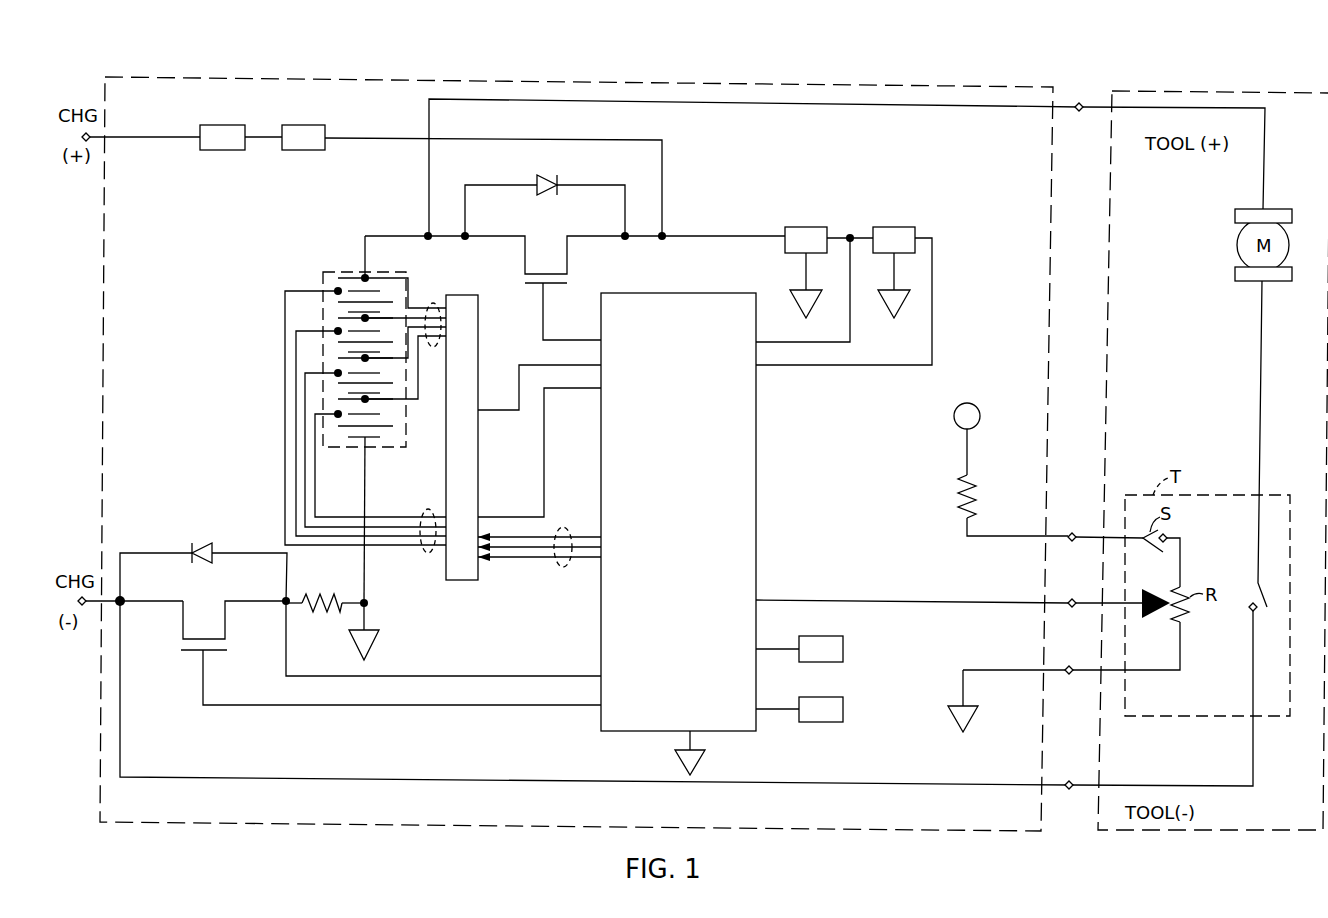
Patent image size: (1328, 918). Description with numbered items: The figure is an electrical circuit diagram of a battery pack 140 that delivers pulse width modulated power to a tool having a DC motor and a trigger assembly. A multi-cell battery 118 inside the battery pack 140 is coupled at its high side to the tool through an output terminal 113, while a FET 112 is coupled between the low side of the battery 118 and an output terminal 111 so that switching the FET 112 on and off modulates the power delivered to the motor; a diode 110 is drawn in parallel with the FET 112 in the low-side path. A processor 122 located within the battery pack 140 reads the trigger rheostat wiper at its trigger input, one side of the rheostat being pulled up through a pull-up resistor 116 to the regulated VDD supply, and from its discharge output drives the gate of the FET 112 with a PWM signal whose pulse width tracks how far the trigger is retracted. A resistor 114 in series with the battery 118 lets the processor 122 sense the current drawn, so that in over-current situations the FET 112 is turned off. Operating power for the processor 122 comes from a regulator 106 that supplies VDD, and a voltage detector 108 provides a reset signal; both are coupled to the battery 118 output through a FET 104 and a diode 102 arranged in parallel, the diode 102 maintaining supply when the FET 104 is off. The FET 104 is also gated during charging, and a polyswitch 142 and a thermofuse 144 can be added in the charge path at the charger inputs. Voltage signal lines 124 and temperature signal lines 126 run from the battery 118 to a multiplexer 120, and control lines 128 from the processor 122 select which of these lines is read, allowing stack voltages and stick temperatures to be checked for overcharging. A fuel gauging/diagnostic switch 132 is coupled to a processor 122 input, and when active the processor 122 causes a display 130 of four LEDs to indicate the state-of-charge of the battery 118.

The diode 102 is at (547, 176).
The FET 104 is at (562, 283).
The regulator 106 is at (818, 227).
The voltage detector 108 is at (905, 227).
The diode 110 is at (212, 548).
The output terminal 111 is at (1070, 792).
The FET 112 is at (213, 655).
The output terminal 113 is at (1085, 103).
The resistor 114 is at (305, 597).
The pull-up resistor 116 is at (970, 478).
The multi-cell battery 118 is at (342, 270).
The multiplexer 120 is at (478, 485).
The processor 122 is at (725, 293).
The voltage signal lines 124 is at (440, 305).
The temperature signal lines 126 is at (428, 508).
The control lines 128 is at (563, 568).
The display 130 is at (835, 636).
The fuel gauging/diagnostic switch 132 is at (835, 697).
The battery pack 140 is at (680, 78).
The polyswitch 142 is at (230, 125).
The thermofuse 144 is at (310, 125).